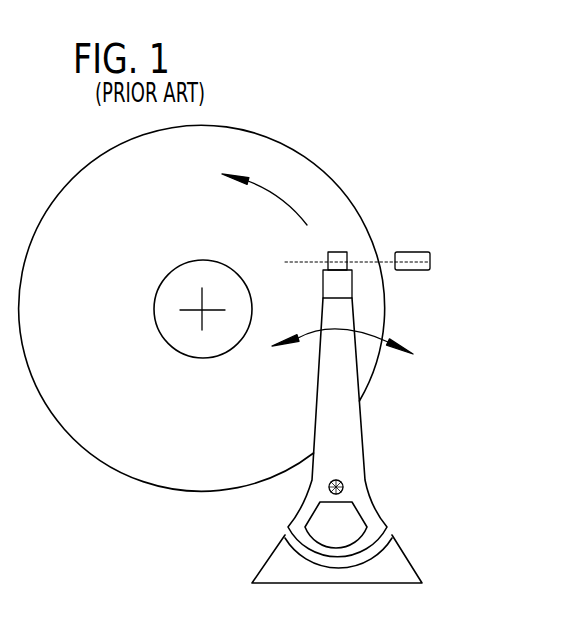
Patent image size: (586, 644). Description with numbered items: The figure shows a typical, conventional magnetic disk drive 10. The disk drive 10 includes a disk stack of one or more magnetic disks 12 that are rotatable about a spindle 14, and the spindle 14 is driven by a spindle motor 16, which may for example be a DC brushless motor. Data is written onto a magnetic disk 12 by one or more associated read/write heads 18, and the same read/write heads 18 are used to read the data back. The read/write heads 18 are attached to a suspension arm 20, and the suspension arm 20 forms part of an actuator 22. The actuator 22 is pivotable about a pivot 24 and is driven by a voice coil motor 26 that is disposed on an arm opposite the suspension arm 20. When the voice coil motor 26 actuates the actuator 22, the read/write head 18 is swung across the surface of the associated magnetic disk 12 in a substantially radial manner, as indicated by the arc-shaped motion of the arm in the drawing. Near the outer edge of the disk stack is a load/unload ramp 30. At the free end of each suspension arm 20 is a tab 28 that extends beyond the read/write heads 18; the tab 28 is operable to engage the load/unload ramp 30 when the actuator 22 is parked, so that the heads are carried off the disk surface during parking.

The magnetic disk drive 10 is at (353, 70).
The magnetic disk 12 is at (122, 462).
The spindle 14 is at (202, 310).
The spindle motor 16 is at (166, 276).
The read/write head 18 is at (353, 281).
The suspension arm 20 is at (362, 414).
The actuator 22 is at (365, 487).
The pivot 24 is at (344, 488).
The voice coil motor 26 is at (437, 528).
The tab 28 is at (341, 252).
The load/unload ramp 30 is at (427, 252).